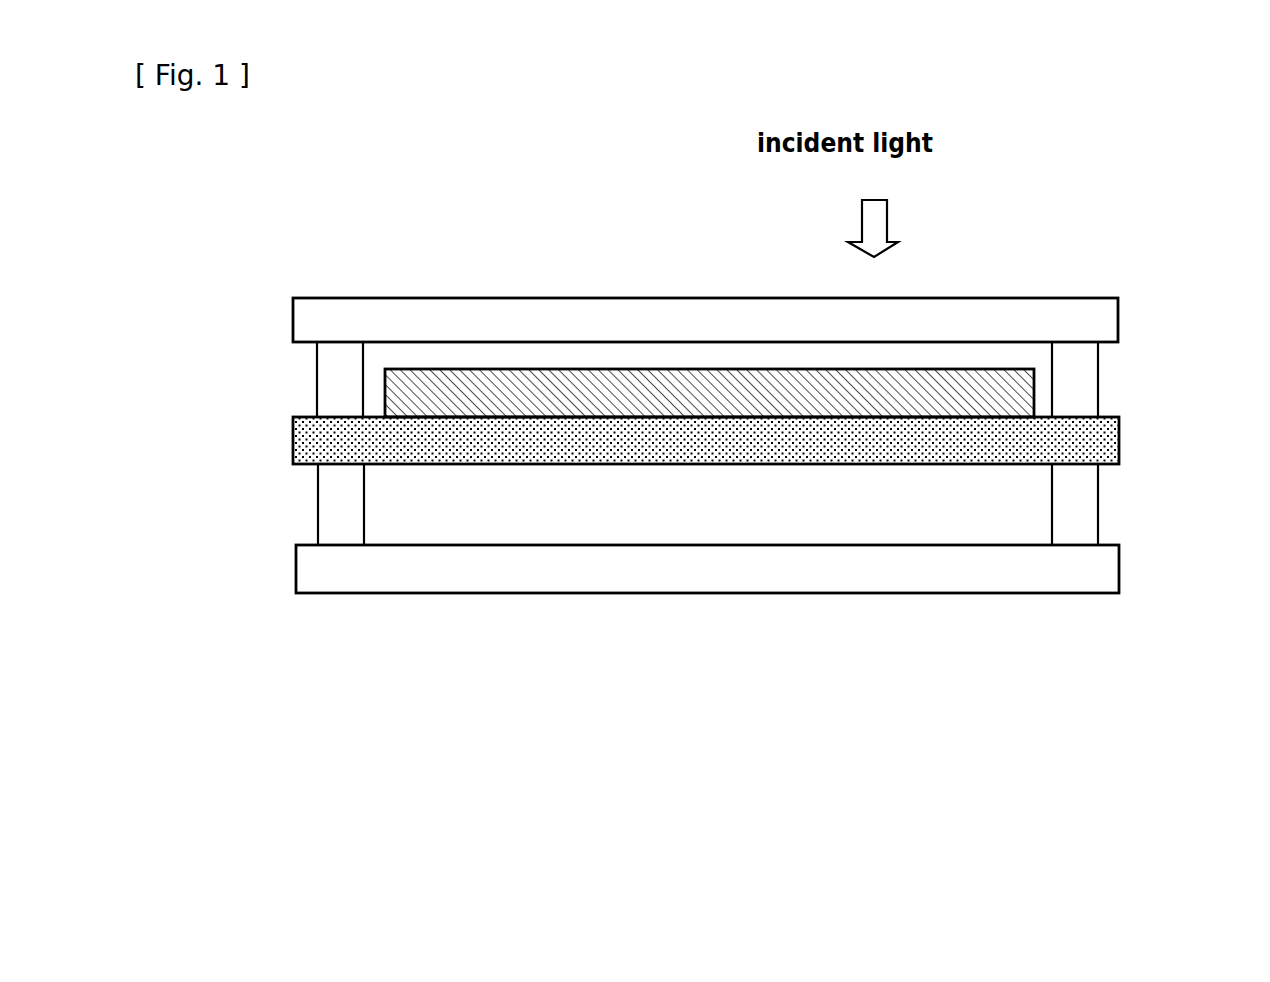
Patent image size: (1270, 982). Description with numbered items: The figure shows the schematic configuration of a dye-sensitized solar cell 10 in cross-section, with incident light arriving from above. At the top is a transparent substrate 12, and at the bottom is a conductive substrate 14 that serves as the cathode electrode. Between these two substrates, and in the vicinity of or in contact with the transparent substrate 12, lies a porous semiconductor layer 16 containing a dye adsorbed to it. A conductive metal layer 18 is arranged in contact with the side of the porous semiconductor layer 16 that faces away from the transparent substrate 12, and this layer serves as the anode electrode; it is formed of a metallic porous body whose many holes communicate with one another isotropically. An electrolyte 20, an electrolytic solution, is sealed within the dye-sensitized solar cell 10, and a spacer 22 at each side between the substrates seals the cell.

The dye-sensitized solar cell 10 is at (757, 783).
The transparent substrate 12 is at (608, 303).
The conductive substrate 14 is at (1103, 573).
The porous semiconductor layer 16 is at (985, 400).
The conductive metal layer 18 is at (1100, 427).
The electrolyte 20 is at (1007, 497).
The spacer 22 is at (332, 499).